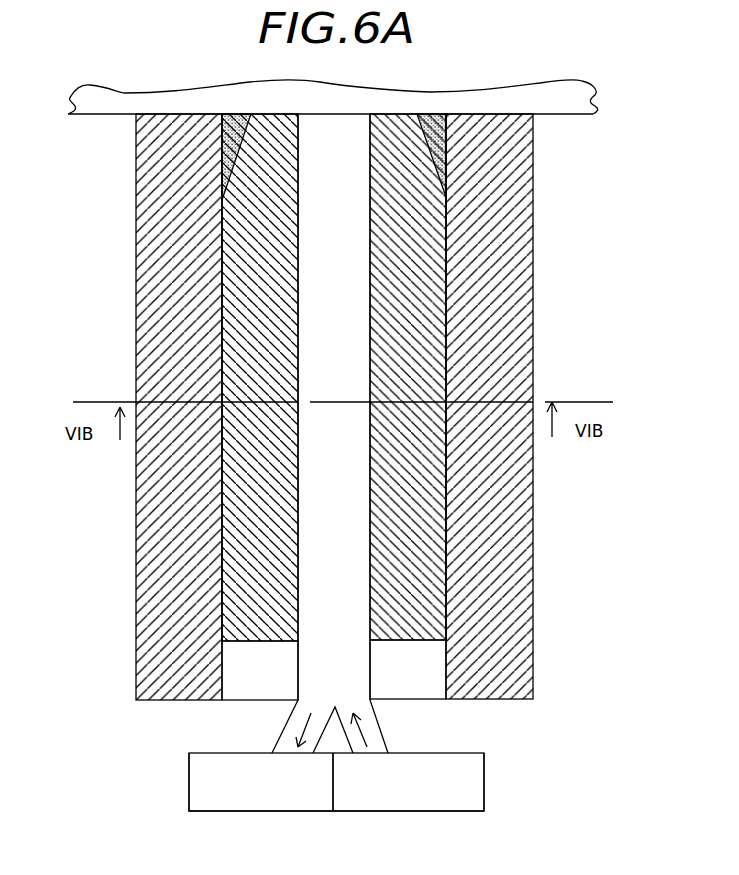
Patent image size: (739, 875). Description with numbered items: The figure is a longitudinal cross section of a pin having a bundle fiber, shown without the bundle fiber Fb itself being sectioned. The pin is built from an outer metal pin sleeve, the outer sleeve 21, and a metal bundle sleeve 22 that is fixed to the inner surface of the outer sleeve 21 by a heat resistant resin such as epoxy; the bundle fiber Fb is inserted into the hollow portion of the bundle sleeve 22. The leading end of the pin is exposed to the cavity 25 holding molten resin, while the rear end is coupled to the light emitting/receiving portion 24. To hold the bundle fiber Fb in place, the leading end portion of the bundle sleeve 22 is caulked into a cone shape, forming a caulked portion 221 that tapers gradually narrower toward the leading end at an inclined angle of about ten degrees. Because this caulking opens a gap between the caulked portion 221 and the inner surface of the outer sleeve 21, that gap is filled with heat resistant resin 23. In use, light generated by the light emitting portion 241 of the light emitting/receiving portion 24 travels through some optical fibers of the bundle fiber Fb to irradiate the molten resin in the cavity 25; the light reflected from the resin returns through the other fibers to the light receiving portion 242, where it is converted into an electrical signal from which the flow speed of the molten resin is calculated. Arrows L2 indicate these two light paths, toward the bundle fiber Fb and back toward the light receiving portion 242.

The outer sleeve 21 is at (488, 290).
The bundle sleeve 22 is at (423, 223).
The caulked portion 221 is at (445, 162).
The heat resistant resin 23 is at (436, 127).
The light emitting/receiving portion 24 is at (484, 778).
The light emitting portion 241 is at (435, 795).
The light receiving portion 242 is at (272, 797).
The cavity 25 is at (595, 110).
The bundle fiber Fb is at (348, 443).
The arrows indicating light L2 is at (412, 727).